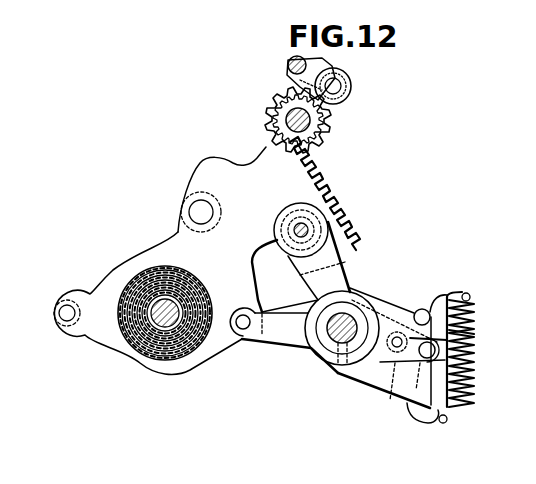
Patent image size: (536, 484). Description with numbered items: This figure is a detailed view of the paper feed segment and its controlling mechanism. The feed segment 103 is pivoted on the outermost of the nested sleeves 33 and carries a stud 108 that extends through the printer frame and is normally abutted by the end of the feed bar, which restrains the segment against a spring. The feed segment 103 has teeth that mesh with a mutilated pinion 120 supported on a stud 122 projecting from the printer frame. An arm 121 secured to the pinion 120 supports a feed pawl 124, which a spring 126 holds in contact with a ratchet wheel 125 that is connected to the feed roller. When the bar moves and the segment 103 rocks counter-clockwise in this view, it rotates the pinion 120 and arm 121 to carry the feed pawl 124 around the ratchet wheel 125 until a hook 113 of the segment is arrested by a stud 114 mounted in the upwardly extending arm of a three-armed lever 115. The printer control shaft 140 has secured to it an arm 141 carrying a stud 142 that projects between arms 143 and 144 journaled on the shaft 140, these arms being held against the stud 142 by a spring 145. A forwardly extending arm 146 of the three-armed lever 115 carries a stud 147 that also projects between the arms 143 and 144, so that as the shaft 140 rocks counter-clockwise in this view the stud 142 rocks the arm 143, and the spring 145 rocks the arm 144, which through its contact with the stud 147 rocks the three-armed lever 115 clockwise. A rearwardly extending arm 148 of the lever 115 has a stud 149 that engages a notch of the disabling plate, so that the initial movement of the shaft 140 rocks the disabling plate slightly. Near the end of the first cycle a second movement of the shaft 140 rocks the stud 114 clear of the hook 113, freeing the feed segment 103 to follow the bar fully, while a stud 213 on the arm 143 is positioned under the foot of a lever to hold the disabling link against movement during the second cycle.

The nested sleeves 33 is at (182, 348).
The feed segment 103 is at (333, 190).
The stud 108 is at (181, 211).
The hook 113 is at (292, 265).
The stud 114 is at (308, 228).
The three-armed lever 115 is at (347, 282).
The mutilated pinion 120 is at (316, 148).
The arm 121 is at (337, 117).
The stud 122 is at (288, 120).
The feed pawl 124 is at (294, 74).
The ratchet wheel 125 is at (280, 98).
The spring 126 is at (350, 103).
The printer control shaft 140 is at (328, 350).
The arm 141 is at (380, 388).
The stud 142 is at (391, 400).
The arm 143 is at (450, 292).
The arm 144 is at (418, 423).
The spring 145 is at (470, 310).
The forwardly extending arm 146 is at (438, 351).
The stud 147 is at (466, 340).
The rearwardly extending arm 148 is at (282, 339).
The stud 149 is at (246, 316).
The stud 213 is at (432, 303).